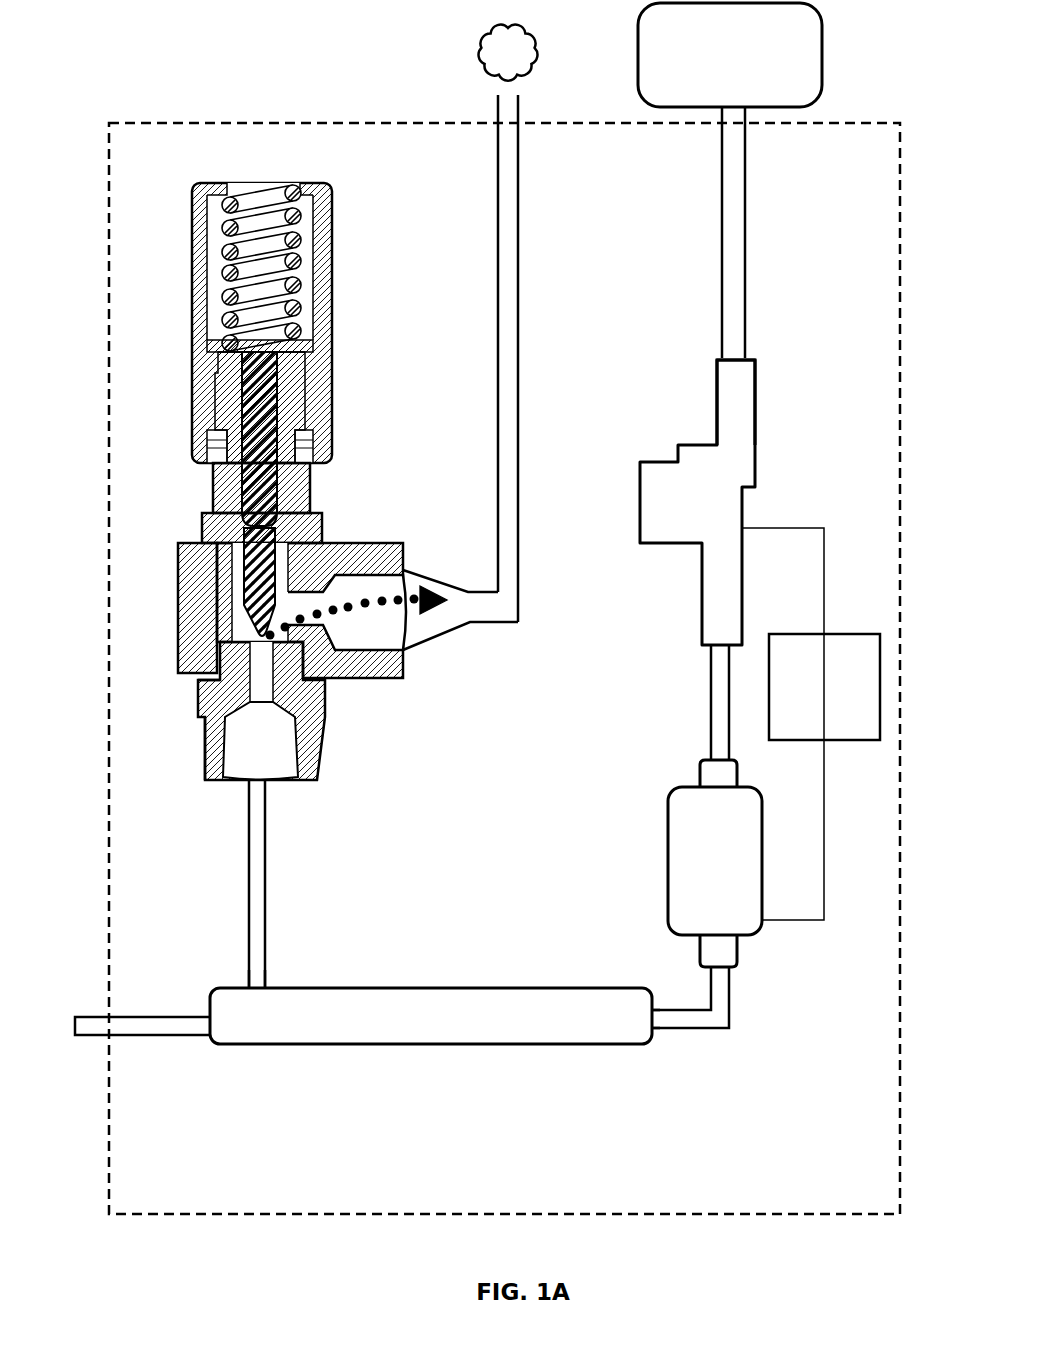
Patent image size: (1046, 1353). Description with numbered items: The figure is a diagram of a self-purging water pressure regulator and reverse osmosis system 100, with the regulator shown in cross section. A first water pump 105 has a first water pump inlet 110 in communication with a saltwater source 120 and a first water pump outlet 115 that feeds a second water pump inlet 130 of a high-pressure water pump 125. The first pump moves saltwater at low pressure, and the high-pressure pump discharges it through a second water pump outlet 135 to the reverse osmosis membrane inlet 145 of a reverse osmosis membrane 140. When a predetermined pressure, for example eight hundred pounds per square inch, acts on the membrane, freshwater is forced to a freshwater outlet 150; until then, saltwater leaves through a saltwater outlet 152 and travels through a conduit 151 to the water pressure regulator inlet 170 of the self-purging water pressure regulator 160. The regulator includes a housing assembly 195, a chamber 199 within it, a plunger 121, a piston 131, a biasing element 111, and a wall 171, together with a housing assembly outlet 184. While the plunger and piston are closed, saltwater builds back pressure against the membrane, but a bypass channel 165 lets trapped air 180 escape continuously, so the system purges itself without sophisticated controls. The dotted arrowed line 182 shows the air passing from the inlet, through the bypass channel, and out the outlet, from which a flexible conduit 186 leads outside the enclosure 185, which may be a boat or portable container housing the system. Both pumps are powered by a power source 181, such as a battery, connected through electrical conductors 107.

The reverse osmosis system 100 is at (158, 84).
The first water pump 105 is at (640, 468).
The electrical conductors 107 is at (808, 528).
The first water pump inlet 110 is at (717, 362).
The biasing element 111 is at (330, 262).
The first water pump outlet 115 is at (702, 645).
The saltwater source 120 is at (824, 62).
The plunger 121 is at (272, 403).
The high-pressure water pump 125 is at (668, 845).
The second water pump inlet 130 is at (700, 760).
The piston 131 is at (312, 515).
The second water pump outlet 135 is at (733, 977).
The reverse osmosis membrane 140 is at (472, 1045).
The reverse osmosis membrane inlet 145 is at (652, 1033).
The freshwater outlet 150 is at (210, 1040).
The conduit 151 is at (266, 872).
The saltwater outlet 152 is at (270, 988).
The self-purging water pressure regulator 160 is at (172, 288).
The bypass channel 165 is at (318, 715).
The water pressure regulator inlet 170 is at (232, 793).
The wall 171 is at (200, 687).
The air 180 is at (508, 53).
The power source 181 is at (824, 687).
The dotted arrowed line 182 is at (420, 590).
The housing assembly outlet 184 is at (445, 632).
The enclosure 185 is at (903, 479).
The conduit 186 is at (498, 258).
The housing assembly 195 is at (200, 722).
The chamber 199 is at (238, 625).